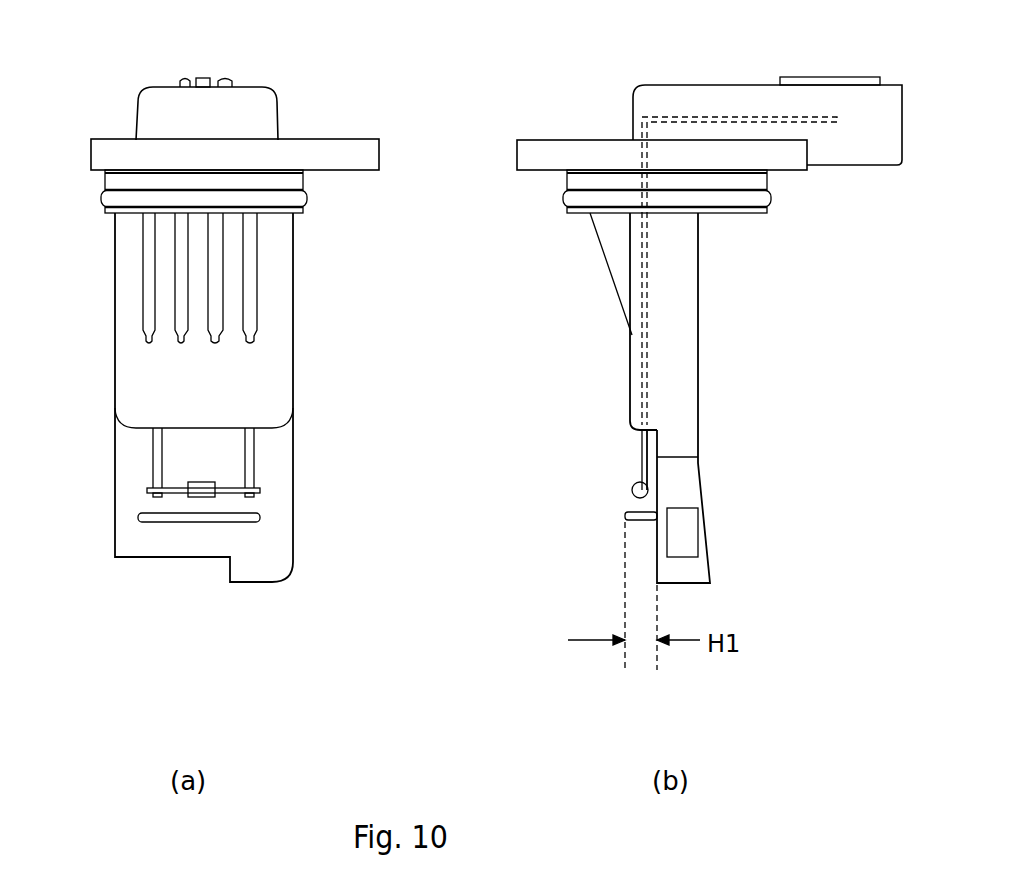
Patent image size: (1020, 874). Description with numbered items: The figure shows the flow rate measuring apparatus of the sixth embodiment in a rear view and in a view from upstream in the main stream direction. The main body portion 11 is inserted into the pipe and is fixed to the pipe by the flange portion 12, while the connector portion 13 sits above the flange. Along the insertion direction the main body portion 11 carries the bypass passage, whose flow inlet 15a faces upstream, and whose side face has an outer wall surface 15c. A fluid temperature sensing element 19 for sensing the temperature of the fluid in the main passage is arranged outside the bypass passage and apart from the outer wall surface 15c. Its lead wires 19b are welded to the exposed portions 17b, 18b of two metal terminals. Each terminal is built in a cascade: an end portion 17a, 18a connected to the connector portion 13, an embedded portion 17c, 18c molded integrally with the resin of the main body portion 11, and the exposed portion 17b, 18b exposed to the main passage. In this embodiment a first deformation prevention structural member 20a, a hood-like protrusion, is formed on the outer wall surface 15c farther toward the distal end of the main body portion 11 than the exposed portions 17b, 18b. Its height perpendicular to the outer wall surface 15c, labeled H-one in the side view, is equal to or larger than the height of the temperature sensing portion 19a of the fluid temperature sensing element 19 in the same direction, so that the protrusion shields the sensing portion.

The main body portion 11 is at (293, 312).
The flange portion 12 is at (323, 140).
The connector portion 13 is at (140, 122).
The flow inlet 15a is at (688, 545).
The outer wall surface 15c is at (145, 490).
The end portion 17a is at (739, 224).
The exposed portion 17b is at (353, 455).
The embedded portion 17c is at (554, 360).
The end portion 18a is at (755, 115).
The exposed portion 18b is at (157, 475).
The embedded portion 18c is at (642, 365).
The fluid temperature sensing element 19 is at (207, 495).
The temperature sensing portion 19a is at (203, 495).
The lead wires 19b is at (177, 495).
The first deformation prevention structural member 20a is at (242, 523).